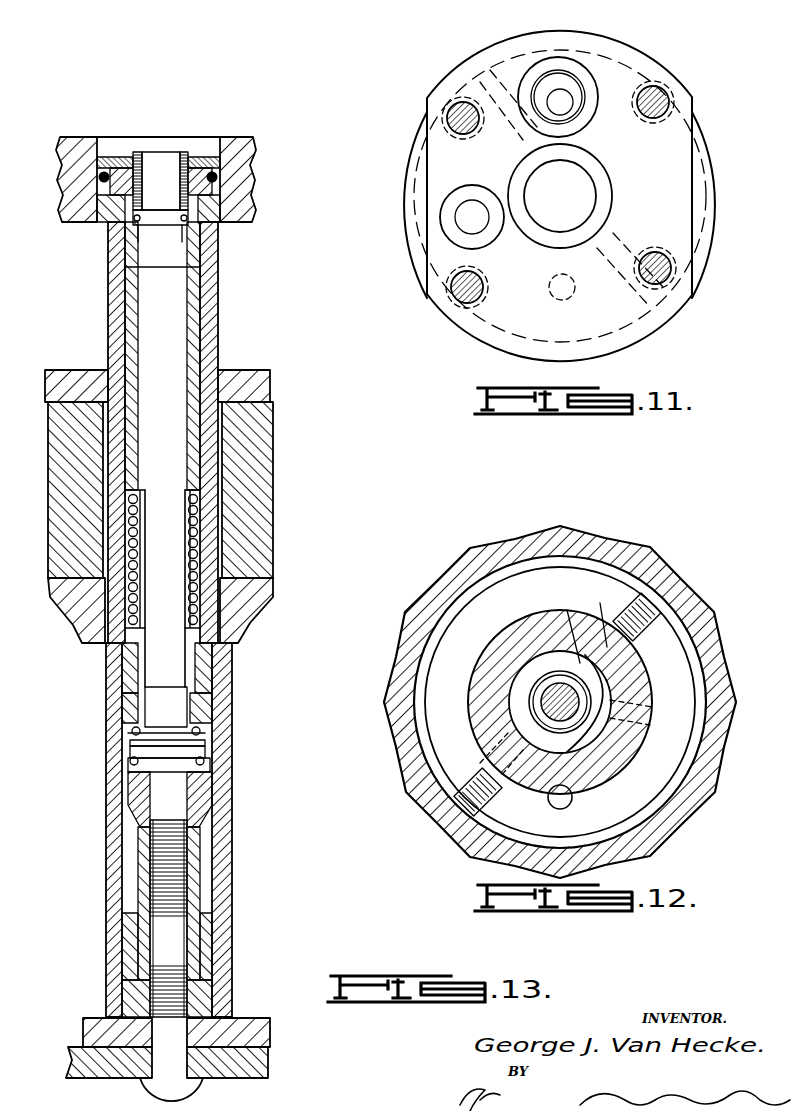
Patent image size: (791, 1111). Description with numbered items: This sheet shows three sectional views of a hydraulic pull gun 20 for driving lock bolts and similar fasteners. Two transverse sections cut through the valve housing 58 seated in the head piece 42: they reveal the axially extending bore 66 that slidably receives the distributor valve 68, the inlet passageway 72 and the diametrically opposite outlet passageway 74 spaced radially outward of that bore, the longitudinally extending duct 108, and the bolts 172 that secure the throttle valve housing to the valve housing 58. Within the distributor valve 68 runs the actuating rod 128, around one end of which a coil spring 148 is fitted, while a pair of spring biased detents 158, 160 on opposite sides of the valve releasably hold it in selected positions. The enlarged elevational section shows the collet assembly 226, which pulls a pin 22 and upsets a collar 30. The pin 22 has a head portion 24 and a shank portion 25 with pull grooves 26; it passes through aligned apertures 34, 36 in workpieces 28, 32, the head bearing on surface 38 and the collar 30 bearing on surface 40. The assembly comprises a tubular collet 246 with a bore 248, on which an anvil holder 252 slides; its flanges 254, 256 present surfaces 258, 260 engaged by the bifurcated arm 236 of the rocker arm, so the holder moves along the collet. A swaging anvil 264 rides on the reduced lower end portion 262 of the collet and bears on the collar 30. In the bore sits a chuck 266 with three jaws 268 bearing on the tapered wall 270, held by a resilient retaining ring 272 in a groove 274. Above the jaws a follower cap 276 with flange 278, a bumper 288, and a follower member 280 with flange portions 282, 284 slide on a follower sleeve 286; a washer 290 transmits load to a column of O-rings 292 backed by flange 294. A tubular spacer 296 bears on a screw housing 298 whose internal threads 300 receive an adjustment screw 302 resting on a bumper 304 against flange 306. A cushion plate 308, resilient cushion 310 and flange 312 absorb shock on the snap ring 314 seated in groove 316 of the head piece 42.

In FIG. 11, the hydraulic pull gun 20 is at (450, 56).
In FIG. 11, the head piece 42 is at (715, 148).
In FIG. 11, the inlet passageway 72 is at (558, 103).
In FIG. 12, the inlet passageway 72 is at (560, 607).
In FIG. 11, the outlet passageway 74 is at (567, 294).
In FIG. 12, the outlet passageway 74 is at (573, 803).
In FIG. 11, the duct 108 is at (480, 228).
In FIG. 12, the duct 108 is at (652, 695).
In FIG. 11, the bolts 172 is at (655, 100).
In FIG. 12, the valve housing 58 is at (560, 702).
In FIG. 12, the bore 66 is at (537, 653).
In FIG. 12, the distributor valve 68 is at (527, 677).
In FIG. 12, the coil spring 148 is at (530, 700).
In FIG. 12, the spring biased detent 158 is at (640, 660).
In FIG. 12, the spring biased detent 160 is at (503, 803).
In FIG. 12, the actuating rod 128 is at (577, 753).
In FIG. 13, the pin 22 is at (184, 874).
In FIG. 13, the head portion 24 is at (192, 1092).
In FIG. 13, the shank portion 25 is at (191, 904).
In FIG. 13, the pull grooves 26 is at (198, 834).
In FIG. 13, the workpiece 28 is at (251, 1063).
In FIG. 13, the collar 30 is at (201, 988).
In FIG. 13, the workpiece 32 is at (264, 1033).
In FIG. 13, the aperture 34 is at (150, 1061).
In FIG. 13, the aperture 36 is at (150, 1030).
In FIG. 13, the surface 38 is at (255, 1080).
In FIG. 13, the surface 40 is at (240, 1013).
In FIG. 13, the collet assembly 226 is at (92, 786).
In FIG. 13, the bifurcated arm 236 is at (262, 441).
In FIG. 13, the collet 246 is at (221, 721).
In FIG. 13, the bore 248 is at (201, 691).
In FIG. 13, the anvil holder 252 is at (228, 916).
In FIG. 13, the flange 254 is at (269, 386).
In FIG. 13, the flange 256 is at (261, 601).
In FIG. 13, the surface 258 is at (254, 406).
In FIG. 13, the surface 260 is at (272, 556).
In FIG. 13, the lower end portion 262 is at (143, 876).
In FIG. 13, the swaging anvil 264 is at (132, 961).
In FIG. 13, the chuck 266 is at (140, 818).
In FIG. 13, the jaws 268 is at (192, 790).
In FIG. 13, the wall 270 is at (148, 810).
In FIG. 13, the resilient retaining ring 272 is at (211, 762).
In FIG. 13, the groove 274 is at (130, 761).
In FIG. 13, the follower cap 276 is at (206, 739).
In FIG. 13, the flange 278 is at (132, 733).
In FIG. 13, the follower member 280 is at (204, 661).
In FIG. 13, the flange portion 282 is at (128, 723).
In FIG. 13, the flange portion 284 is at (130, 644).
In FIG. 13, the follower sleeve 286 is at (123, 611).
In FIG. 13, the bumper 288 is at (145, 725).
In FIG. 13, the washer 290 is at (224, 633).
In FIG. 13, the column of O-rings 292 is at (198, 531).
In FIG. 13, the flange 294 is at (203, 493).
In FIG. 13, the tubular spacer 296 is at (194, 314).
In FIG. 13, the screw housing 298 is at (196, 247).
In FIG. 13, the internal threads 300 is at (128, 197).
In FIG. 13, the adjustment screw 302 is at (160, 152).
In FIG. 13, the bumper 304 is at (128, 223).
In FIG. 13, the flange 306 is at (214, 233).
In FIG. 13, the cushion plate 308 is at (254, 157).
In FIG. 13, the resilient cushion 310 is at (254, 174).
In FIG. 13, the flange 312 is at (254, 191).
In FIG. 13, the snap ring 314 is at (93, 158).
In FIG. 13, the groove 316 is at (220, 152).